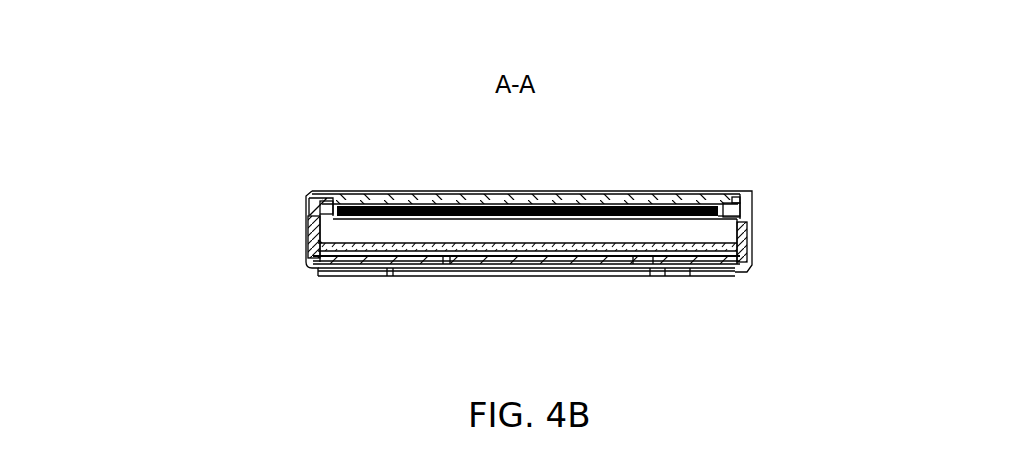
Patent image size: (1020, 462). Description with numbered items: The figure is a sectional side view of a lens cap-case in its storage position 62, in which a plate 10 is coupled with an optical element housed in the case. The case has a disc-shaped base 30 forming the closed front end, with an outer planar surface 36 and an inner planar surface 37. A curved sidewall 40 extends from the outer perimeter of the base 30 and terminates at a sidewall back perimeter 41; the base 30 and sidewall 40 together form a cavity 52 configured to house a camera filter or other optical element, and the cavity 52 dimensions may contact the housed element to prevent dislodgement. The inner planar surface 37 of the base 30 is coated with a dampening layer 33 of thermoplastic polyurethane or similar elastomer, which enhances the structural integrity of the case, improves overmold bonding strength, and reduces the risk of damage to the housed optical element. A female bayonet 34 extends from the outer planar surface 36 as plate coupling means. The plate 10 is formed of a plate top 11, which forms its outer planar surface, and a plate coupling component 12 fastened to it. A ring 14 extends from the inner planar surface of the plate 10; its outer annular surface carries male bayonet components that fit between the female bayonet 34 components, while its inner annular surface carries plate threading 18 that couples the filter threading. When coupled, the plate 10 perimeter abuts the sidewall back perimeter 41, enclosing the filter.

The plate 10 is at (432, 170).
The plate top 11 is at (660, 182).
The plate coupling component 12 is at (305, 192).
The ring 14 is at (320, 222).
The plate threading 18 is at (693, 217).
The base 30 is at (630, 258).
The dampening layer 33 is at (517, 243).
The female bayonet 34 is at (705, 268).
The outer planar surface 36 is at (449, 259).
The inner planar surface 37 is at (557, 243).
The sidewall 40 is at (745, 218).
The sidewall back perimeter 41 is at (740, 193).
The cavity 52 is at (437, 222).
The storage position 62 is at (367, 160).